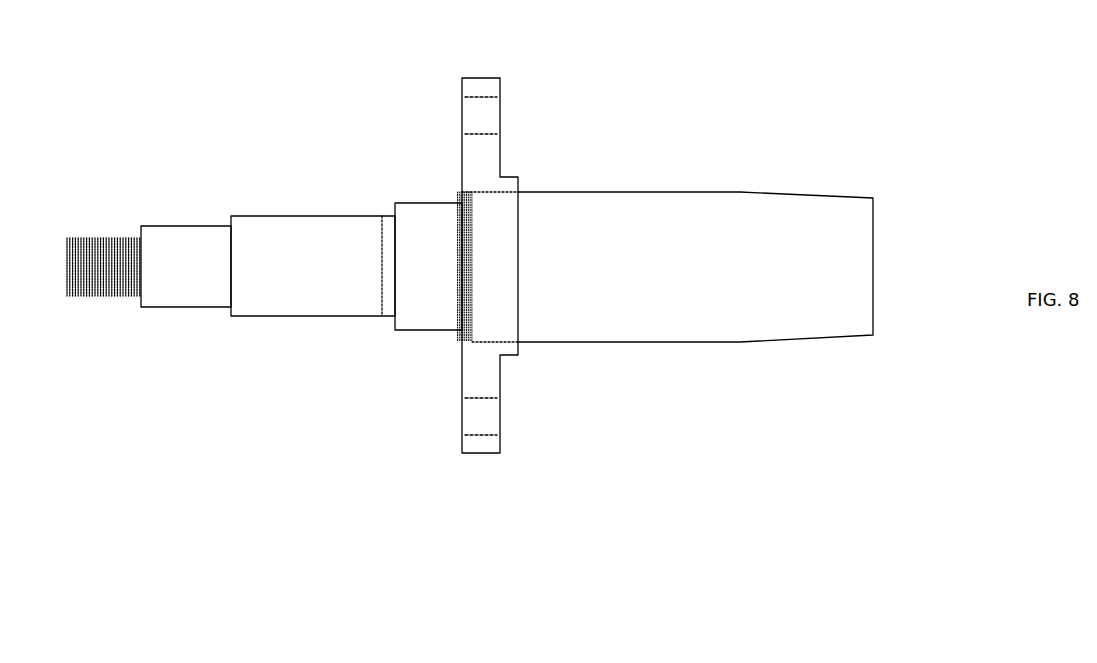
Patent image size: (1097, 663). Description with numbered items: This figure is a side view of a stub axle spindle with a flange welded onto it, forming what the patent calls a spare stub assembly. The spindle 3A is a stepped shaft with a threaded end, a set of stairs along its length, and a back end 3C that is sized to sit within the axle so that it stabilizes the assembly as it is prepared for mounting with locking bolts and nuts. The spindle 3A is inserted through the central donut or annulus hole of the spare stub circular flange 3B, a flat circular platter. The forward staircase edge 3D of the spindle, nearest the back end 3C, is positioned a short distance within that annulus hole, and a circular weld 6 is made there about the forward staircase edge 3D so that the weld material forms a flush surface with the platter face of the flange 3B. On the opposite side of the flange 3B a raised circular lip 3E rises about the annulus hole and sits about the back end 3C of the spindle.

The spindle 3A is at (305, 218).
The spare stub circular flange 3B is at (485, 85).
The back end 3C is at (702, 343).
The forward staircase edge 3D is at (474, 272).
The raised circular lip 3E is at (519, 176).
The weld 6 is at (457, 291).